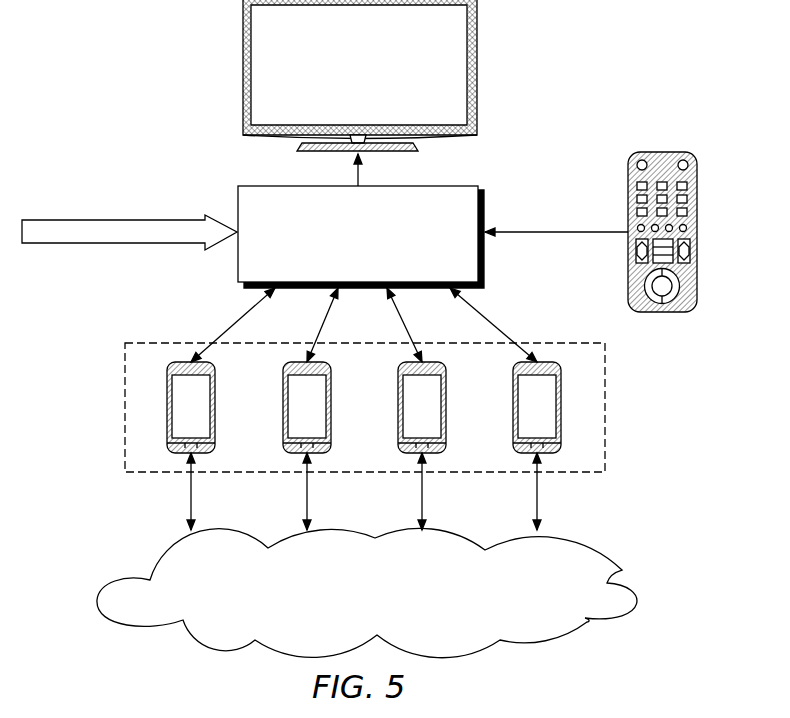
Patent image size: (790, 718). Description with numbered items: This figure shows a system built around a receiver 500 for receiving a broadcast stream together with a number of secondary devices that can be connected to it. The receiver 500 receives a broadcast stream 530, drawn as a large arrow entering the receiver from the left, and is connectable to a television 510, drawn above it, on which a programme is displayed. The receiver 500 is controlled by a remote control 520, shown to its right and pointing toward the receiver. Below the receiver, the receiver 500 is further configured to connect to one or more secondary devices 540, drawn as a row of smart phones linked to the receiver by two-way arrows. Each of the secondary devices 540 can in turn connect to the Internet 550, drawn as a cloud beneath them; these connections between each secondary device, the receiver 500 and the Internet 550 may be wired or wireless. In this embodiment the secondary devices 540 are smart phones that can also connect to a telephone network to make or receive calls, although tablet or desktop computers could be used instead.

The receiver 500 is at (530, 188).
The television 510 is at (477, 62).
The remote control 520 is at (658, 152).
The broadcast stream 530 is at (120, 220).
The secondary devices 540 is at (605, 410).
The Internet 550 is at (622, 570).